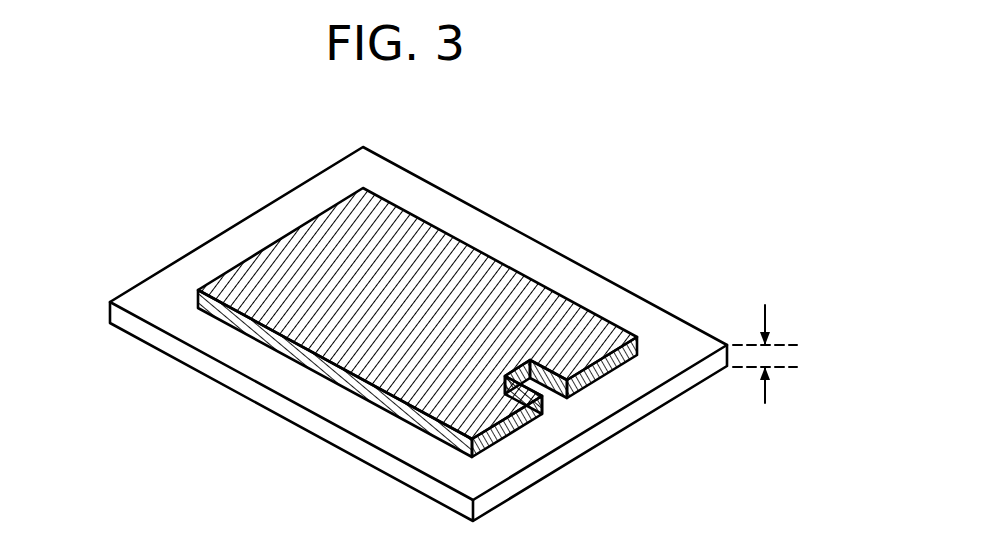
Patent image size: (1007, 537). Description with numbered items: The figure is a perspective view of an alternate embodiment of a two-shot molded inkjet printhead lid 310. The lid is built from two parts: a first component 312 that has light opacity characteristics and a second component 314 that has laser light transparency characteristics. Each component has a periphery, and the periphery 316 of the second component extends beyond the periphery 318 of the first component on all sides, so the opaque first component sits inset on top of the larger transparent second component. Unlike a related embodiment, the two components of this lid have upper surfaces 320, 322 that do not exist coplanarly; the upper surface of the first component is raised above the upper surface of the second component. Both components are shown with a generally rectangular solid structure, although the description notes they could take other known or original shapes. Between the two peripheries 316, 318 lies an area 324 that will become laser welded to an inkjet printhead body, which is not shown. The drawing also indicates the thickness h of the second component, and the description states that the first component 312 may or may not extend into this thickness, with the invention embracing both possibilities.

The inkjet printhead lid 310 is at (413, 312).
The first component 312 is at (417, 331).
The second component 314 is at (647, 302).
The periphery of the second component 316 is at (635, 412).
The periphery of the first component 318 is at (510, 433).
The upper surface of the first component 320 is at (158, 305).
The upper surface of the second component 322 is at (448, 318).
The area between the peripheries 324 is at (328, 193).
The thickness of the second component h is at (787, 355).